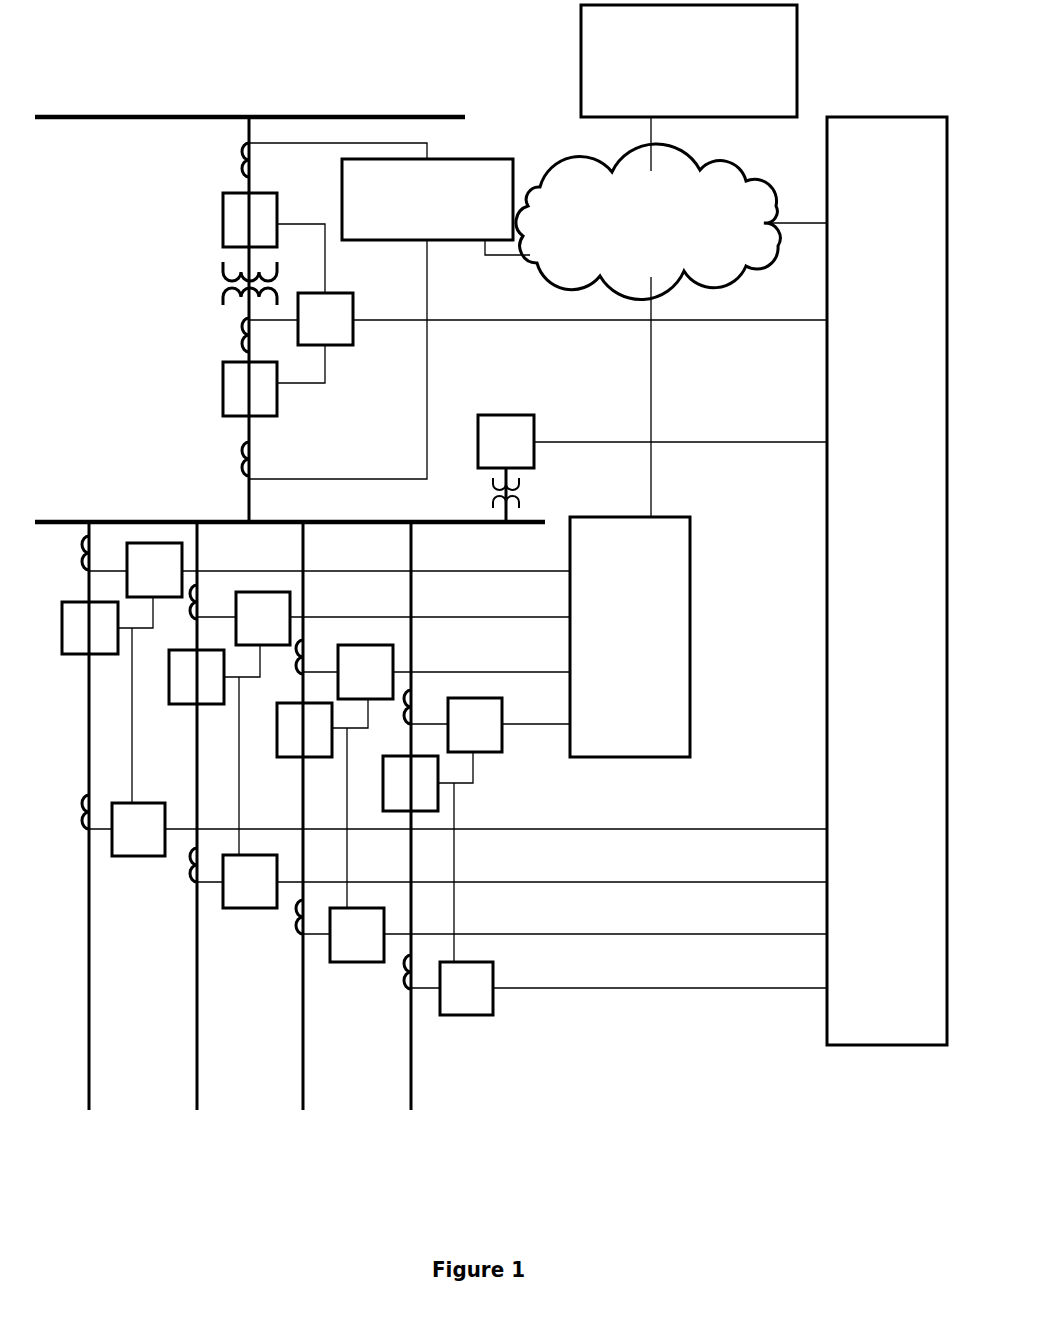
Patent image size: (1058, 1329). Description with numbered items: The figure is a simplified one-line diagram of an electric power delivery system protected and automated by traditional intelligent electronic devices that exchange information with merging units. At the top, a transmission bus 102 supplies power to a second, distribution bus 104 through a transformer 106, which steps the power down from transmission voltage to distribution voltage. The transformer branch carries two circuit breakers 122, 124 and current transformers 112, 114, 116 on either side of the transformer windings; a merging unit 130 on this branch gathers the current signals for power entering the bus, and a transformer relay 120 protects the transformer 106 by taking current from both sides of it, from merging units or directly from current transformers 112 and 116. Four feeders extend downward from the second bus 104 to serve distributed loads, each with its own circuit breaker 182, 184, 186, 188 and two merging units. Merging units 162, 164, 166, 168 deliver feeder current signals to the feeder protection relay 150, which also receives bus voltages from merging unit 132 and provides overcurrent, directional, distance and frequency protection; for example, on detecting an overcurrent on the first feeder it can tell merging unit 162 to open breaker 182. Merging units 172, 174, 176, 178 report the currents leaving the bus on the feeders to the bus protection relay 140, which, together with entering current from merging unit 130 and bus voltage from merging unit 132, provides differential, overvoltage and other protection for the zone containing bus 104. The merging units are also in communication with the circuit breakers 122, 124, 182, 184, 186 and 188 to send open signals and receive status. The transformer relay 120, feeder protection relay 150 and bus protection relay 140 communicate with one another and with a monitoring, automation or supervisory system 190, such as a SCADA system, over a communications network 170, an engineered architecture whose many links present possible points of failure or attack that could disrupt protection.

The bus 102 is at (108, 120).
The second bus 104 is at (62, 520).
The transformer 106 is at (222, 274).
The current transformer 112 is at (242, 165).
The current transformer 114 is at (242, 345).
The current transformer 116 is at (242, 450).
The transformer relay 120 is at (492, 158).
The circuit breaker 122 is at (222, 216).
The circuit breaker 124 is at (222, 388).
The merging unit 130 is at (355, 306).
The merging unit 132 is at (536, 456).
The bus protection relay 140 is at (870, 1046).
The feeder protection relay 150 is at (638, 760).
The merging unit 162 is at (184, 562).
The merging unit 164 is at (292, 607).
The merging unit 166 is at (396, 662).
The merging unit 168 is at (500, 712).
The communications network 170 is at (750, 186).
The merging unit 172 is at (140, 860).
The merging unit 174 is at (253, 912).
The merging unit 176 is at (363, 965).
The merging unit 178 is at (475, 1019).
The circuit breaker 182 is at (72, 658).
The circuit breaker 184 is at (182, 706).
The circuit breaker 186 is at (290, 759).
The circuit breaker 188 is at (440, 800).
The supervisory system 190 is at (800, 18).